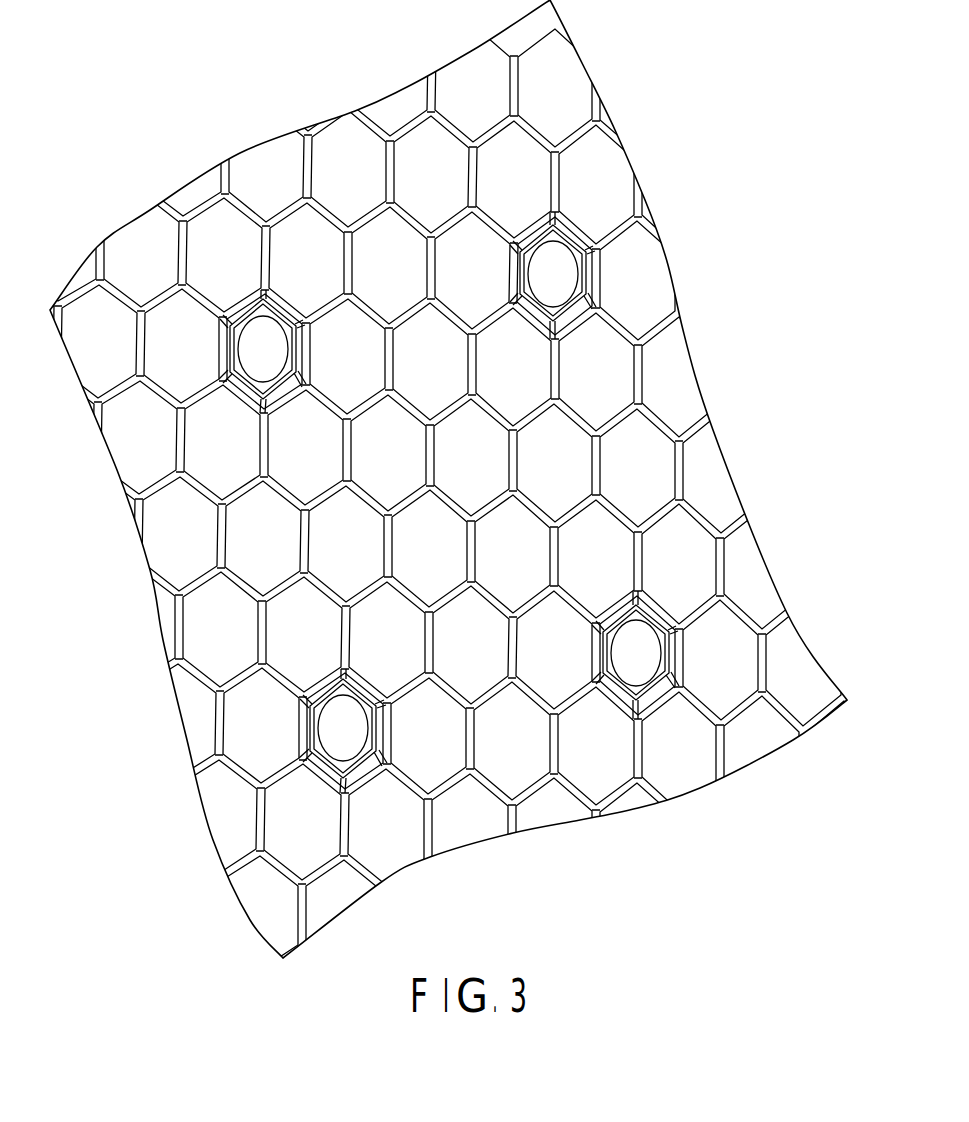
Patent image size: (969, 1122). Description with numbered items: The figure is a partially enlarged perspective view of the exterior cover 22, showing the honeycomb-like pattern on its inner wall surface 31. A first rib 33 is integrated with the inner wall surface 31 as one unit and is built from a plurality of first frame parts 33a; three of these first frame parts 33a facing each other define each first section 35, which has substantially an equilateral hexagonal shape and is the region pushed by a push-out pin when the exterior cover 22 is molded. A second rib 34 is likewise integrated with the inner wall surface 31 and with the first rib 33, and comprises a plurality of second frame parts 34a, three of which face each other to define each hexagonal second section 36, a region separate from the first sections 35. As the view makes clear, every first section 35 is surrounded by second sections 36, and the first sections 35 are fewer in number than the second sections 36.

The exterior cover 22 is at (441, 504).
The inner wall surface 31 is at (345, 156).
The first rib 33 is at (214, 358).
The first frame parts 33a is at (245, 288).
The second rib 34 is at (619, 509).
The second frame parts 34a is at (127, 337).
The first sections 35 is at (287, 318).
The second sections 36 is at (172, 370).